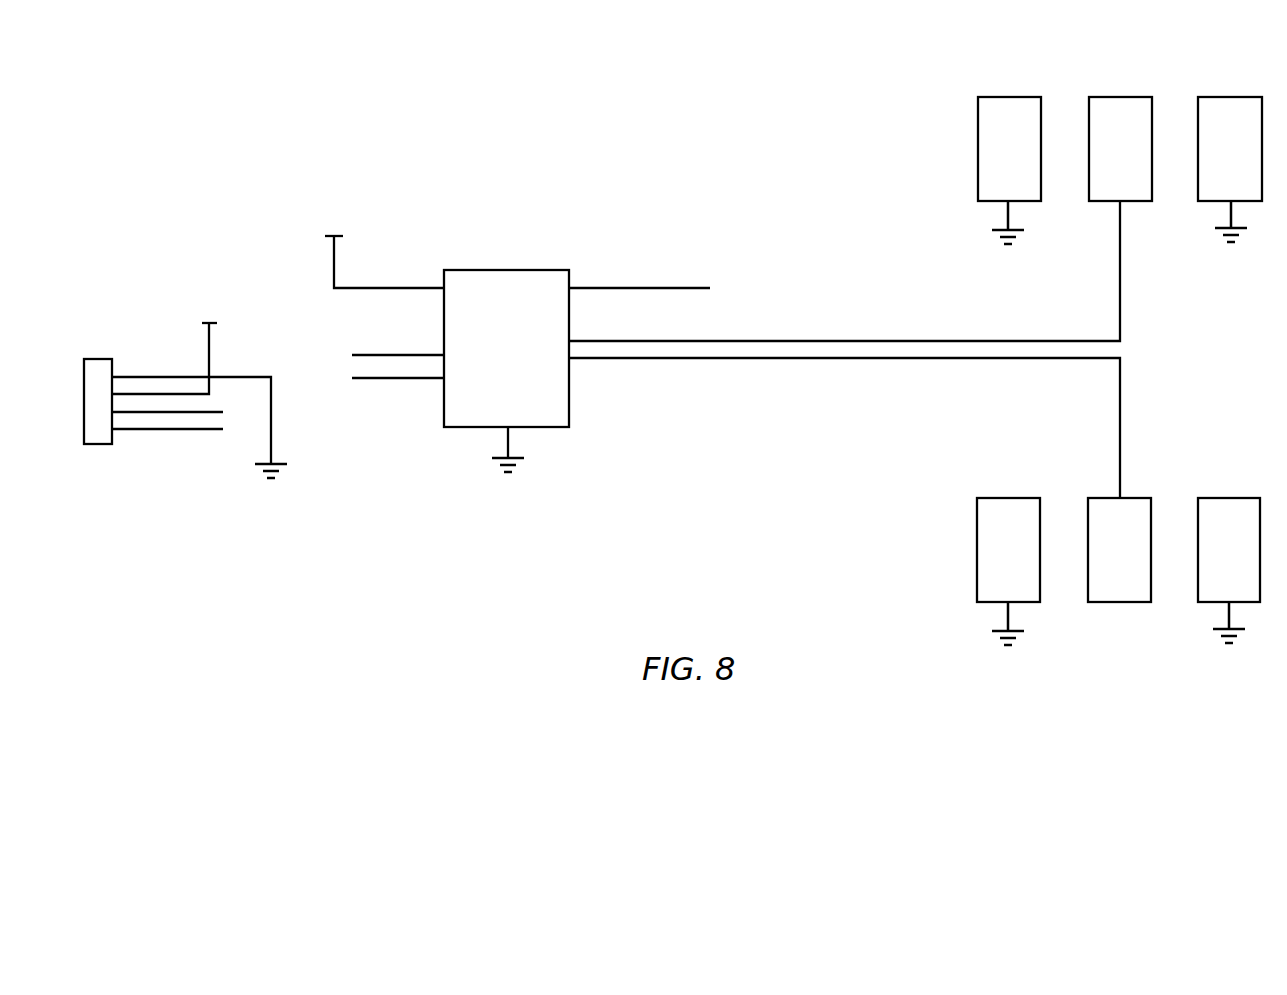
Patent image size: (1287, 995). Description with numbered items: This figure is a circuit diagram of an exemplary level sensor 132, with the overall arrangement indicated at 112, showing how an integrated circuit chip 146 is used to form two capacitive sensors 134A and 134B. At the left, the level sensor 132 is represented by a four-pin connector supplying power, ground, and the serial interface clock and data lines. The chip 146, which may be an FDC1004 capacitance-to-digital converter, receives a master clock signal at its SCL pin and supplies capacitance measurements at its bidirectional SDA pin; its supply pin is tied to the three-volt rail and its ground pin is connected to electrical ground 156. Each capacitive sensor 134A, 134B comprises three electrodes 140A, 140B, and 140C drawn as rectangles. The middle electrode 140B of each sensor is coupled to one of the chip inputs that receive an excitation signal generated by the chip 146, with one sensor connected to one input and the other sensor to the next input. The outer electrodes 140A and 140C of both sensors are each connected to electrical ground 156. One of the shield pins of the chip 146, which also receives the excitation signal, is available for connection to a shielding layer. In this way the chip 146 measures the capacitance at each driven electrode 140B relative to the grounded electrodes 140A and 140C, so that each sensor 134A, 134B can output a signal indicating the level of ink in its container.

The sensor system 112 is at (192, 126).
The level sensor 132 is at (100, 358).
The circuitry 146 is at (494, 278).
The capacitive sensor 134A is at (908, 480).
The capacitive sensor 134B is at (910, 219).
The electrode 140A is at (1001, 96).
The electrode 140B is at (1118, 96).
The electrode 140C is at (1230, 96).
The electrical ground 156 is at (263, 473).